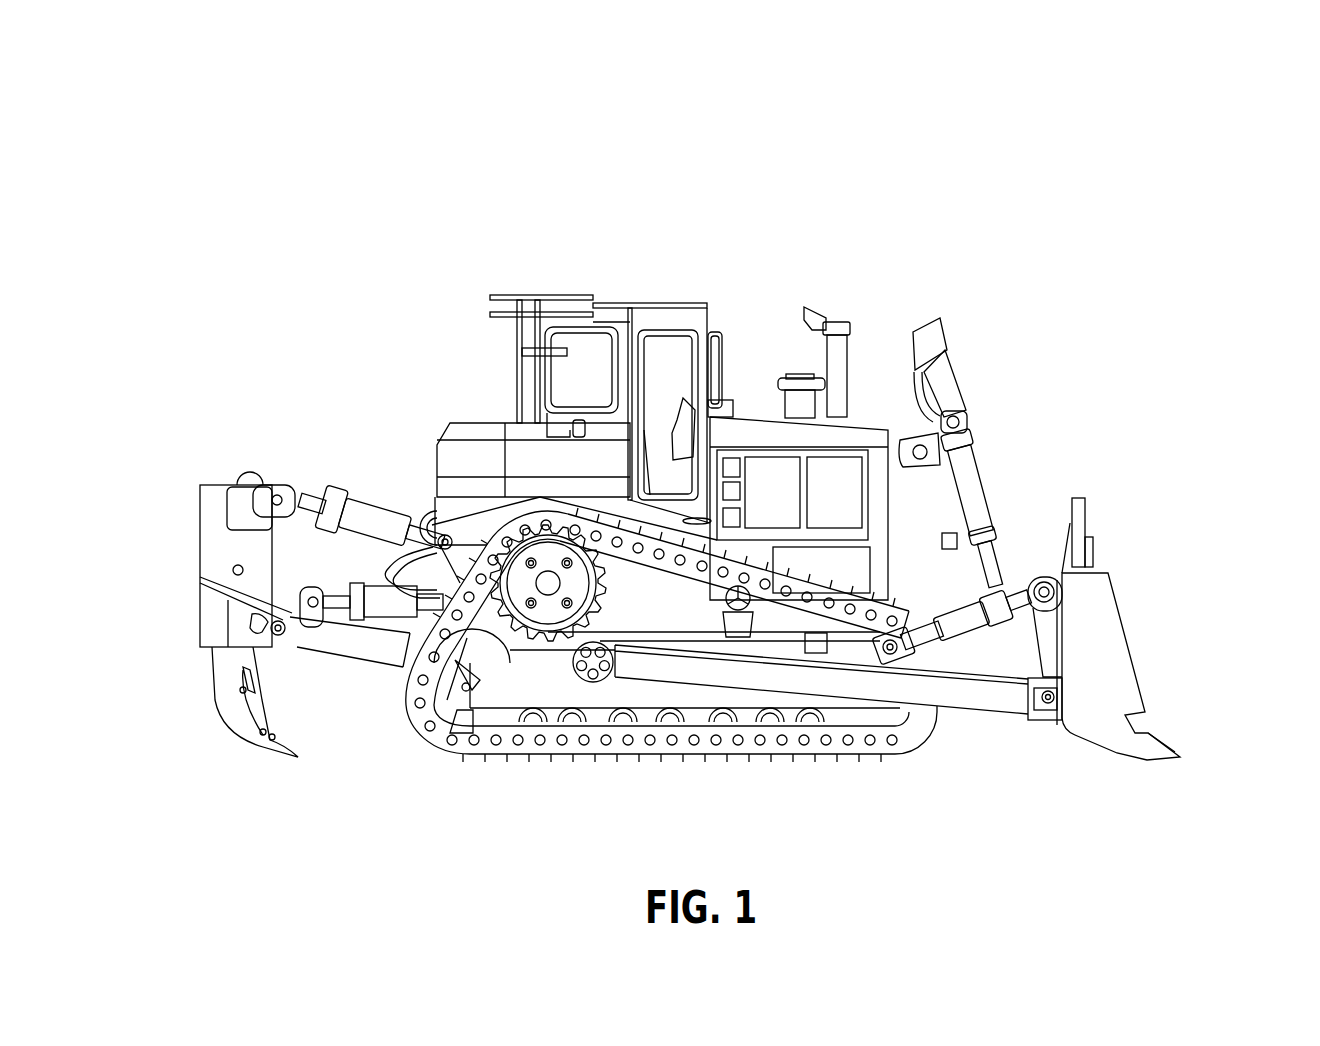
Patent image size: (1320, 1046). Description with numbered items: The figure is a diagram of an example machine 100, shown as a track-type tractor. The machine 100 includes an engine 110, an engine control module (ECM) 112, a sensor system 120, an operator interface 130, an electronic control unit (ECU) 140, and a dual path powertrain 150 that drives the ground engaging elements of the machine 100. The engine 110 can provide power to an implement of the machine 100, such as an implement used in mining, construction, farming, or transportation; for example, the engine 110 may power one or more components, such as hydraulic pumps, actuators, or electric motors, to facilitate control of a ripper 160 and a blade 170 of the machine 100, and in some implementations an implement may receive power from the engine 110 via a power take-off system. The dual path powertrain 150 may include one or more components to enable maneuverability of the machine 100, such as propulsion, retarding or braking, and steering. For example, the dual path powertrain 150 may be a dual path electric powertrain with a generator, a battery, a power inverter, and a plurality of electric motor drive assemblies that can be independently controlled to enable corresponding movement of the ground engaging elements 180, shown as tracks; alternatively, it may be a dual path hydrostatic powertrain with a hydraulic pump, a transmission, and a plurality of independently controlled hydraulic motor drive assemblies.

The machine 100 is at (250, 98).
The engine 110 is at (851, 503).
The engine control module (ECM) 112 is at (790, 503).
The sensor system 120 is at (737, 437).
The operator interface 130 is at (678, 383).
The electronic control unit (ECU) 140 is at (593, 471).
The dual path powertrain 150 is at (623, 573).
The ripper 160 is at (225, 690).
The blade 170 is at (1113, 630).
The ground engaging elements 180 is at (920, 740).